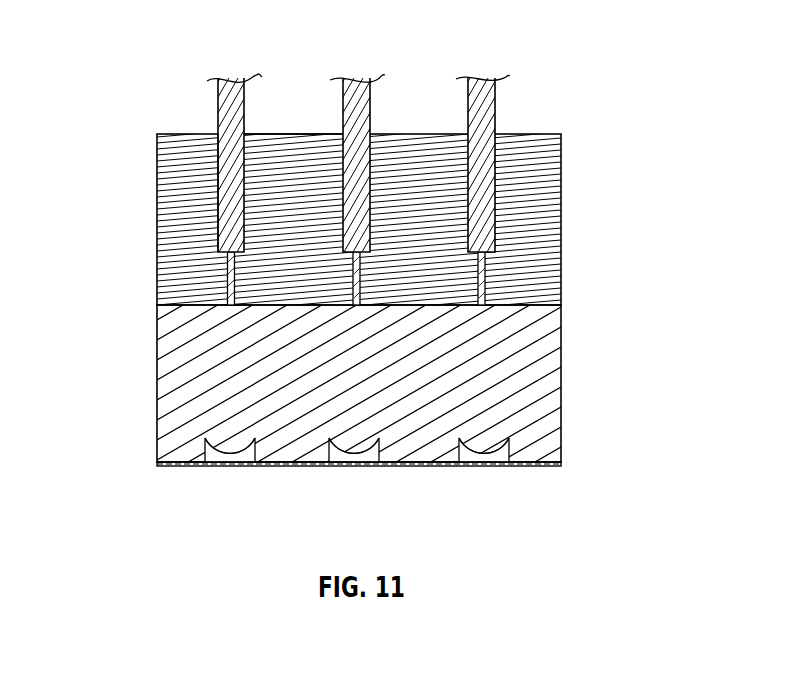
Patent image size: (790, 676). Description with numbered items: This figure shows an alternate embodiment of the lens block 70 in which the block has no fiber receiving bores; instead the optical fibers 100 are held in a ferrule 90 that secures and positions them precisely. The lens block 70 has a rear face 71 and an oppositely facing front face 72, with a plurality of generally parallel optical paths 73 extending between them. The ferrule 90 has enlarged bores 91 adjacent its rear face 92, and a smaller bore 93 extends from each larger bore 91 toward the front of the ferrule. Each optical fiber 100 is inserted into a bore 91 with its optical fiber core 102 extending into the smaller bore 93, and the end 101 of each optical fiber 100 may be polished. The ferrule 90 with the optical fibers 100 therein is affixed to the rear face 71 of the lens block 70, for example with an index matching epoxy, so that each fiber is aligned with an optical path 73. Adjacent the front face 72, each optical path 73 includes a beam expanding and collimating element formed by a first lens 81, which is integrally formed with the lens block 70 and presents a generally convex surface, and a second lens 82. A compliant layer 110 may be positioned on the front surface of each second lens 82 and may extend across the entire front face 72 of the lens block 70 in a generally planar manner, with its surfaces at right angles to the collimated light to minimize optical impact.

The lens block 70 is at (535, 365).
The rear face 71 is at (260, 305).
The front face 72 is at (190, 467).
The optical path 73 is at (483, 395).
The first lens 81 is at (355, 450).
The second lens 82 is at (340, 455).
The ferrule 90 is at (547, 247).
The enlarged bore 91 is at (218, 160).
The rear face 92 is at (257, 134).
The smaller bore 93 is at (228, 270).
The optical fiber 100 is at (218, 98).
The end 101 is at (230, 307).
The optical fiber core 102 is at (232, 282).
The compliant layer 110 is at (412, 465).